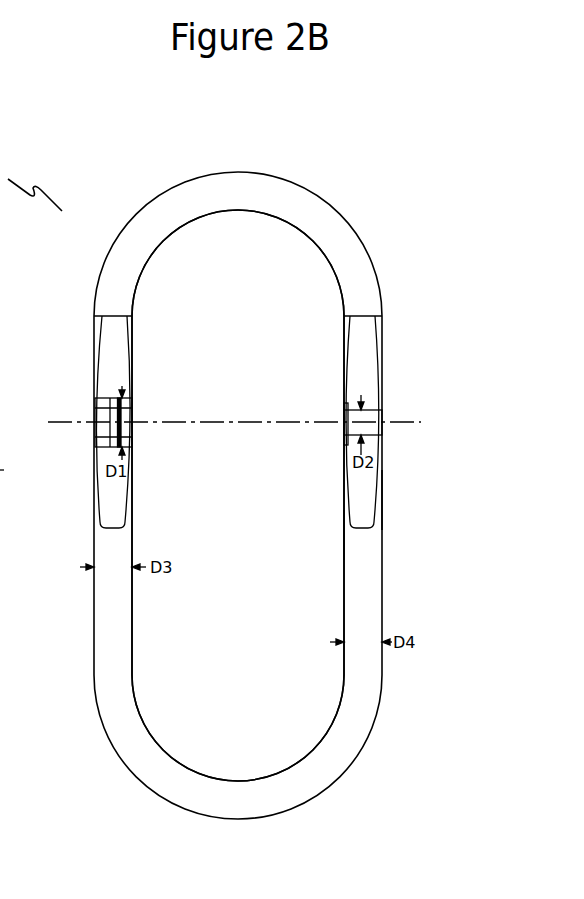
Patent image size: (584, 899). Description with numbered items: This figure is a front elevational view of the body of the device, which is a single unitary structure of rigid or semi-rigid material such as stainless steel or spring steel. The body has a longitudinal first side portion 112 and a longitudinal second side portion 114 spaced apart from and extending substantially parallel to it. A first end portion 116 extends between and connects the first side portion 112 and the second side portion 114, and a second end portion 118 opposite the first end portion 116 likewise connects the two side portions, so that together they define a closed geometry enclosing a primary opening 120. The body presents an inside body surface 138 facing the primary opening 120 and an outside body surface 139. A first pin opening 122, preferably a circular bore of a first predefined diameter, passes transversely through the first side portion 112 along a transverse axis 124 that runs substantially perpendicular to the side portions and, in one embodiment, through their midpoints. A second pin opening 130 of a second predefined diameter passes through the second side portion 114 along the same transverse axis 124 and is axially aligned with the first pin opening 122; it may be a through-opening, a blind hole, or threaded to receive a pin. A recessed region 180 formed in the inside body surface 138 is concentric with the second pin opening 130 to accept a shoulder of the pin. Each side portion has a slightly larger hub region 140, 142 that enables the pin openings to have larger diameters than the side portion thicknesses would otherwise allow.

The first side portion 112 is at (105, 632).
The second side portion 114 is at (365, 607).
The first end portion 116 is at (312, 214).
The second end portion 118 is at (290, 797).
The primary opening 120 is at (240, 657).
The first pin opening 122 is at (141, 412).
The transverse axis 124 is at (62, 421).
The second pin opening 130 is at (336, 416).
The inside body surface 138 is at (340, 534).
The outside body surface 139 is at (386, 500).
The hub region 140 is at (117, 383).
The hub region 142 is at (366, 391).
The recessed region 180 is at (345, 440).